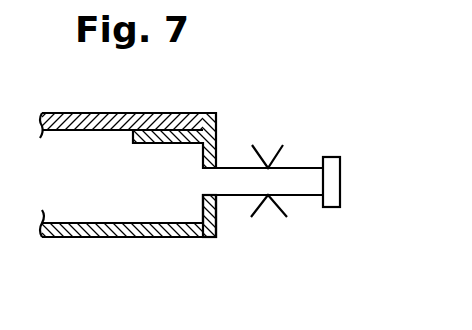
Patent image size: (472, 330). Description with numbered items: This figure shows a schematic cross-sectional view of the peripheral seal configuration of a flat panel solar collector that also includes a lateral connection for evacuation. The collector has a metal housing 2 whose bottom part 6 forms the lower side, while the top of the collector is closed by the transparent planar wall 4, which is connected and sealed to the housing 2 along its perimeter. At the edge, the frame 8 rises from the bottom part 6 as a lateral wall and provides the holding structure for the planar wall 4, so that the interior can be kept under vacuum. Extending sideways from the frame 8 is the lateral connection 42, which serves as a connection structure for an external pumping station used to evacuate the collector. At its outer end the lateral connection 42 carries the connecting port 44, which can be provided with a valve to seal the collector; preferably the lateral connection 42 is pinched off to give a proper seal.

The housing 2 is at (90, 238).
The top transparent planar wall 4 is at (116, 126).
The bottom part 6 is at (150, 238).
The frame 8 is at (217, 205).
The lateral connection 42 is at (302, 178).
The connecting port 44 is at (337, 207).